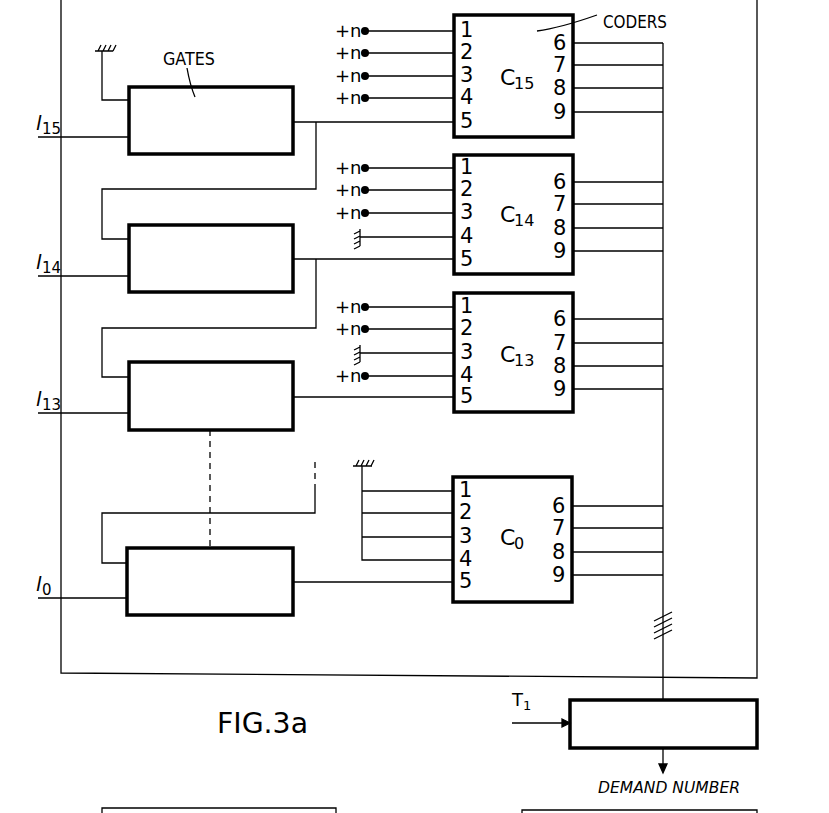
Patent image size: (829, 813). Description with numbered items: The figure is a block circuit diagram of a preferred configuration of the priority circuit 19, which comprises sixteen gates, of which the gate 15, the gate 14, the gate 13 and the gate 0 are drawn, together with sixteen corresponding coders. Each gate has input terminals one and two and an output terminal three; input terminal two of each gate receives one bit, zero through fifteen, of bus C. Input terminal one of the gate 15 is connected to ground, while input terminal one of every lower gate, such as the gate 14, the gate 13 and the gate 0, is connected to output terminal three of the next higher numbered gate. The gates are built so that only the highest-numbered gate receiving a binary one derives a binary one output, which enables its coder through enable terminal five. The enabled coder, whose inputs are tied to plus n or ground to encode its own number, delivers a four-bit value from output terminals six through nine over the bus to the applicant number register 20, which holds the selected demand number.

The priority circuit 19 is at (768, 612).
The applicant number register 20 is at (568, 735).
The gate P15 15 is at (211, 120).
The gate P14 14 is at (211, 258).
The gate P13 13 is at (211, 396).
The gate P0 0 is at (210, 581).